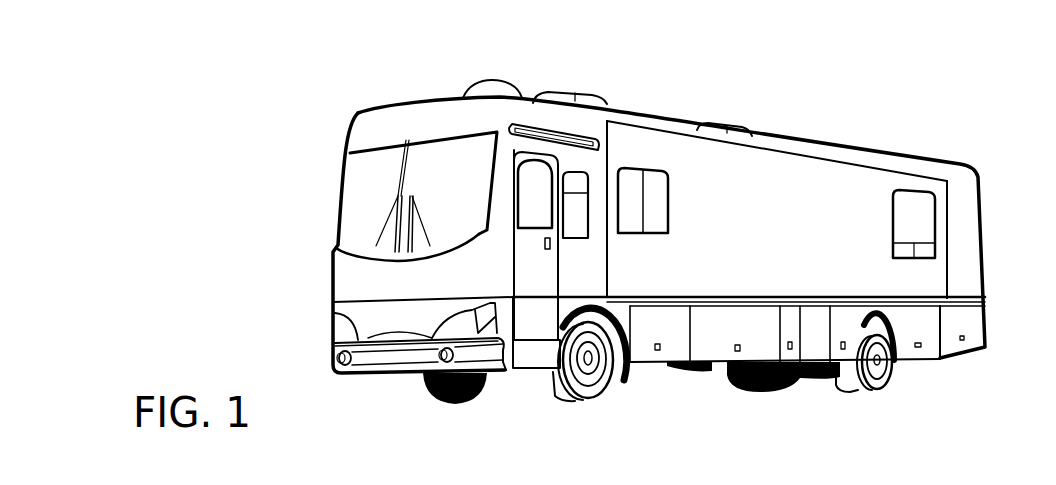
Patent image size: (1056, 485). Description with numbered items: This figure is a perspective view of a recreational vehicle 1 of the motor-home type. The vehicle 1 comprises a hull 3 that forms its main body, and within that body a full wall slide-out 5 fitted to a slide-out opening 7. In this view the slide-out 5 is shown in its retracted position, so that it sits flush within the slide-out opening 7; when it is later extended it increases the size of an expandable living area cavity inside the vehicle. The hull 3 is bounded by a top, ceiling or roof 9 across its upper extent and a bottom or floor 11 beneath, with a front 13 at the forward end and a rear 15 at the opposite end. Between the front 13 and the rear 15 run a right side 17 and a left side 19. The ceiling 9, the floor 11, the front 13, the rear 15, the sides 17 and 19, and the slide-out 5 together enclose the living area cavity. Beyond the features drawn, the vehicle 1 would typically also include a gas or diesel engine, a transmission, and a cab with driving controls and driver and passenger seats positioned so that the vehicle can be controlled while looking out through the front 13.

The recreational vehicle 1 is at (377, 68).
The hull 3 is at (358, 114).
The full wall slide-out 5 is at (766, 231).
The slide-out opening 7 is at (607, 157).
The top/ceiling/roof 9 is at (681, 120).
The bottom/floor 11 is at (668, 365).
The front 13 is at (350, 285).
The rear 15 is at (983, 235).
The right side 17 is at (545, 117).
The left side 19 is at (340, 331).